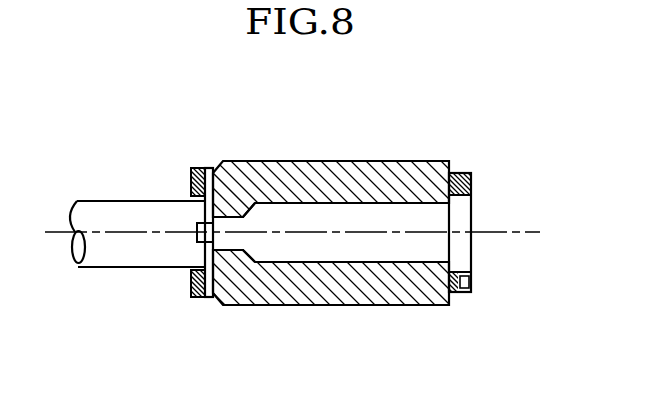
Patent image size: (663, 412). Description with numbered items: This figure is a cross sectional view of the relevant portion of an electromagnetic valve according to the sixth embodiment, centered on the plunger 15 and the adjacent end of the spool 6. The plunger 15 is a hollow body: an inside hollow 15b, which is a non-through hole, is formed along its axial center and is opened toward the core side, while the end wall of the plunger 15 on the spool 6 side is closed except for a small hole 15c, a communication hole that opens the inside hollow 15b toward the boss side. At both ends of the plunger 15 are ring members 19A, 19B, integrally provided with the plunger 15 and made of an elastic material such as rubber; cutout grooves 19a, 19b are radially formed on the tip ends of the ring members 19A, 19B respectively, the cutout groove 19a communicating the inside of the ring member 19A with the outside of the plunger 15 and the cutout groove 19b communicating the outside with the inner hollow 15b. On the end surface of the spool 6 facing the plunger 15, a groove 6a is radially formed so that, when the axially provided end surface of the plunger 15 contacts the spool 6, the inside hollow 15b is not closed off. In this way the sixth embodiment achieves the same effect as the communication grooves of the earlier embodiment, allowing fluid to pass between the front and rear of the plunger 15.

The spool 6 is at (101, 193).
The groove 6a is at (199, 241).
The plunger 15 is at (306, 155).
The inside hollow 15b is at (318, 245).
The small hole 15c is at (225, 222).
The ring member 19A is at (189, 172).
The cutout groove 19a is at (191, 284).
The ring member 19B is at (461, 171).
The cutout groove 19b is at (472, 283).